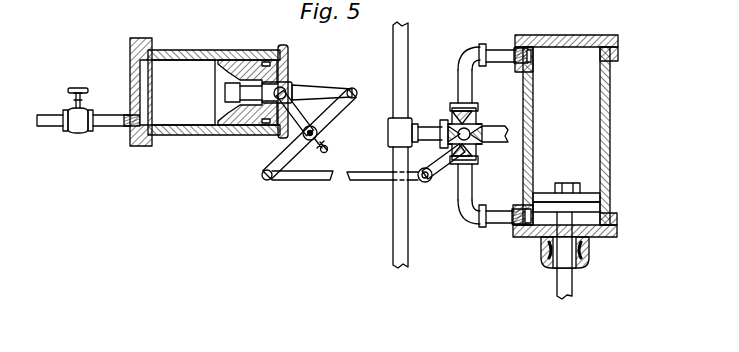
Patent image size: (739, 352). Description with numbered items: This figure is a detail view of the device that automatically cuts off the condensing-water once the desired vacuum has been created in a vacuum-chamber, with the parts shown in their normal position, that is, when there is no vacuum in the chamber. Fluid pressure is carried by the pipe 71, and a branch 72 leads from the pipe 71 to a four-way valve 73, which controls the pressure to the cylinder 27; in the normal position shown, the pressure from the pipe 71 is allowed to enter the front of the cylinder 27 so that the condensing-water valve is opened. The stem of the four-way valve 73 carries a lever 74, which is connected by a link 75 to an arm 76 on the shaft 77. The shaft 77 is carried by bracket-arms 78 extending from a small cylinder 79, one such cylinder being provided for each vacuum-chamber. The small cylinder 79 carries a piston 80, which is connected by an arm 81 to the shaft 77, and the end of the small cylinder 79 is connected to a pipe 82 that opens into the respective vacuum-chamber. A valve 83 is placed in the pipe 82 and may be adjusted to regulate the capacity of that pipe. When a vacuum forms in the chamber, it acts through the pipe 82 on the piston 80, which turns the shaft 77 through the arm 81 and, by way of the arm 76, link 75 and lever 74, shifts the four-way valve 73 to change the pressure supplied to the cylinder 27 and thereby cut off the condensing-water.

The cylinder 27 is at (550, 167).
The pipe 71 is at (415, 155).
The branch 72 is at (467, 133).
The four-way valve 73 is at (480, 126).
The lever 74 is at (430, 185).
The link 75 is at (381, 186).
The arm 76 is at (288, 180).
The shaft 77 is at (318, 140).
The bracket-arms 78 is at (281, 104).
The small cylinder 79 is at (248, 50).
The piston 80 is at (215, 86).
The arm 81 is at (332, 114).
The pipe 82 is at (120, 112).
The valve 83 is at (83, 121).